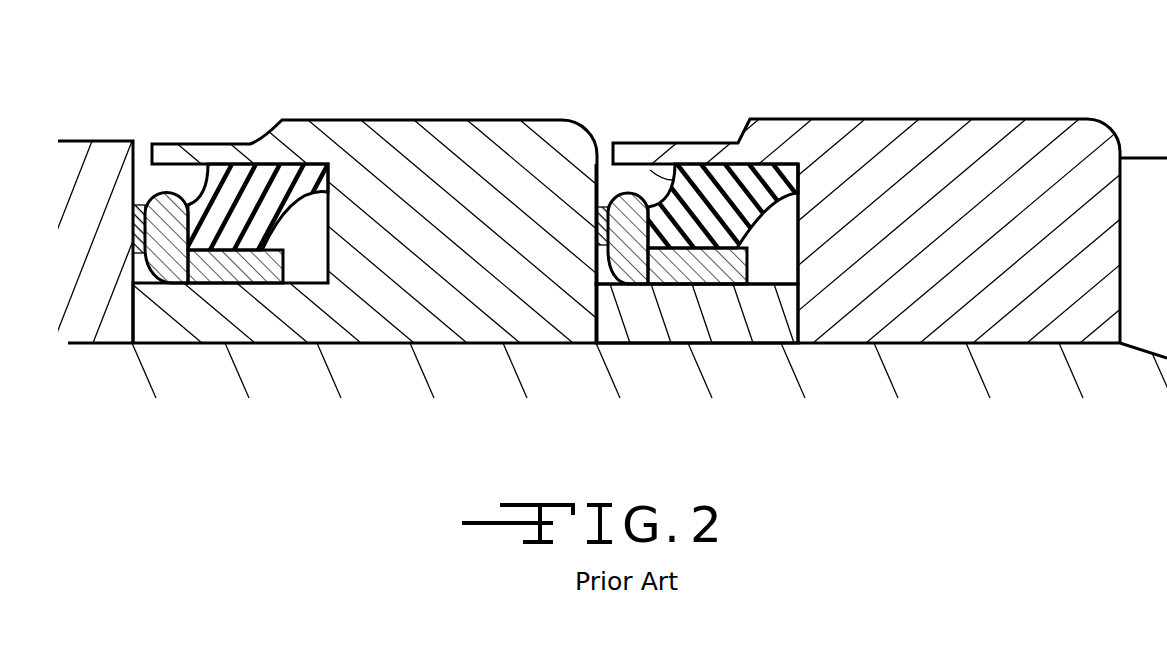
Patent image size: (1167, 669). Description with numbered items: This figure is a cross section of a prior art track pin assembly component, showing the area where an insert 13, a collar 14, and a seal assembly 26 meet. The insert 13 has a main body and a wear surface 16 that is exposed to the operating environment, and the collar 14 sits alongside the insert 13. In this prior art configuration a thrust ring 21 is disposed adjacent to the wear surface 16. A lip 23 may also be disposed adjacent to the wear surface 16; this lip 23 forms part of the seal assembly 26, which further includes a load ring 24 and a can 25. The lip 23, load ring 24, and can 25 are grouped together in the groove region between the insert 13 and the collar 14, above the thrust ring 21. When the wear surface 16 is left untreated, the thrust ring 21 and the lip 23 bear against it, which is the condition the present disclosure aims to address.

The insert 13 is at (367, 145).
The collar 14 is at (965, 155).
The wear surface 16 is at (590, 182).
The thrust ring 21 is at (725, 318).
The lip 23 is at (603, 205).
The load ring 24 is at (710, 185).
The can 25 is at (653, 258).
The seal assembly 26 is at (650, 182).